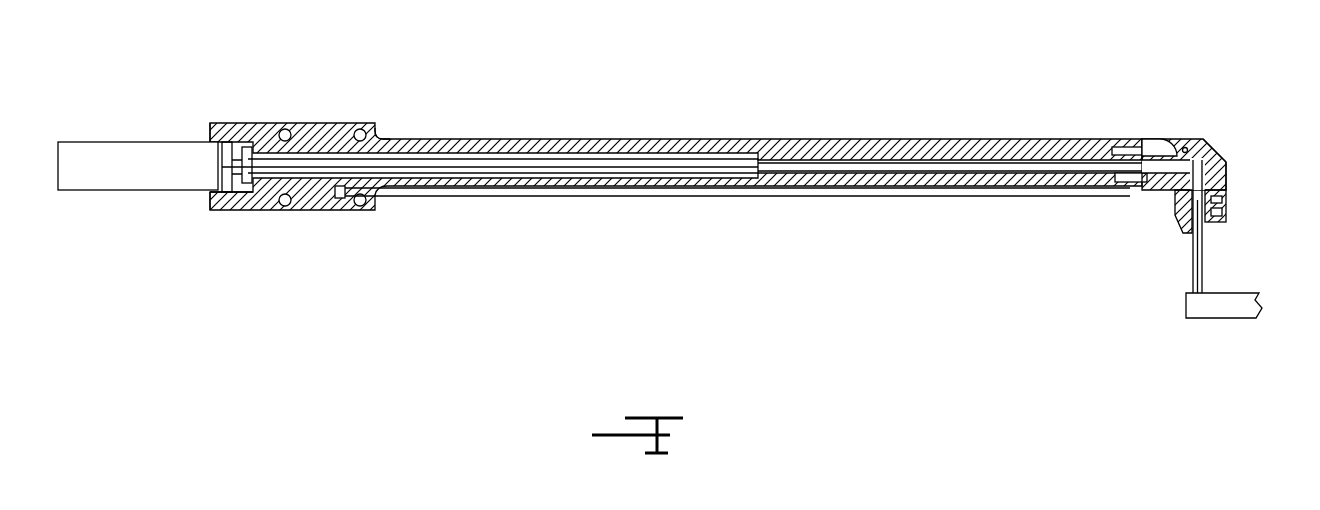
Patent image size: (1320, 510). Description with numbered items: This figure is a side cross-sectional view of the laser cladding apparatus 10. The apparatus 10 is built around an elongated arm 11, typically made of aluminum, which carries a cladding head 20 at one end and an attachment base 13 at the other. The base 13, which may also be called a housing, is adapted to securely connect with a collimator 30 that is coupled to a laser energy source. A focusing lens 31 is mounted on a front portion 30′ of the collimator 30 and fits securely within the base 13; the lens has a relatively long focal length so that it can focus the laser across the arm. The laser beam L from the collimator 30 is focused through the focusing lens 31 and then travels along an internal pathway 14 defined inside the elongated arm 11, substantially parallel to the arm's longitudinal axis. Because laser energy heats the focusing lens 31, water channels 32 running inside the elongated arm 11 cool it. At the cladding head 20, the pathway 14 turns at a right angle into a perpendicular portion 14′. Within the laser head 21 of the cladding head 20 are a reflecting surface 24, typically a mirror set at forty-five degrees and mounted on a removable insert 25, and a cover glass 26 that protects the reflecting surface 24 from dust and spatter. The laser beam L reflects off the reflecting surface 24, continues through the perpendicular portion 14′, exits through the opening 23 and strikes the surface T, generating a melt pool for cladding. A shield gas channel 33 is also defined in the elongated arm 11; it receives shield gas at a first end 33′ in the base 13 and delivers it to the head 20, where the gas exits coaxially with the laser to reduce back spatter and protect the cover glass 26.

The laser cladding apparatus 10 is at (816, 92).
The elongated arm 11 is at (522, 139).
The attachment base 13 is at (318, 130).
The internal pathway 14 is at (967, 163).
The perpendicular portion 14′ is at (1228, 212).
The cladding head 20 is at (1193, 127).
The laser head 21 is at (1137, 147).
The opening 23 is at (1181, 247).
The reflecting surface 24 is at (1218, 160).
The removable insert 25 is at (1213, 158).
The cover glass 26 is at (1180, 209).
The collimator 30 is at (112, 141).
The front portion of collimator 30′ is at (191, 198).
The focusing lens 31 is at (240, 150).
The water channels 32 is at (620, 150).
The shield gas channel 33 is at (483, 190).
The first end of shield gas channel 33′ is at (340, 198).
The laser beam L is at (1198, 272).
The surface T is at (1222, 309).